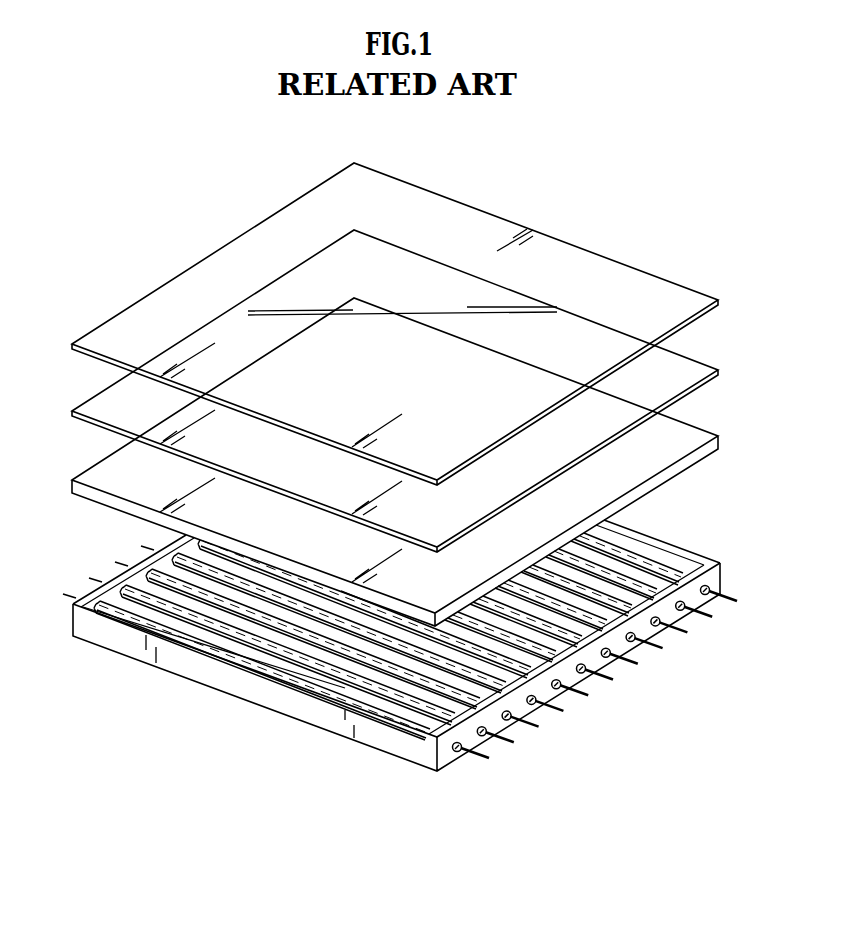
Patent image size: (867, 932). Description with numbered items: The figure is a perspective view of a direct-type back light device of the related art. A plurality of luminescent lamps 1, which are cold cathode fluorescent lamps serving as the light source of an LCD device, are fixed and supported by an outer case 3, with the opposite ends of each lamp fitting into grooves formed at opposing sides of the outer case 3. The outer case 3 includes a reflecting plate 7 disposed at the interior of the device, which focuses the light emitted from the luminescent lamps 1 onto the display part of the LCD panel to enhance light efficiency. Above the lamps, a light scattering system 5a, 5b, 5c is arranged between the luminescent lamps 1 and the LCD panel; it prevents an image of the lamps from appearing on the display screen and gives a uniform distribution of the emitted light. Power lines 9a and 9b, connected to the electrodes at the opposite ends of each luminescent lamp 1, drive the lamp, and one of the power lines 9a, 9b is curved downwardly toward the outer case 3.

The luminescent lamp 1 is at (270, 647).
The outer case 3 is at (420, 752).
The light scattering system 5a is at (678, 433).
The light scattering system 5b is at (678, 364).
The light scattering system 5c is at (678, 294).
The reflecting plate 7 is at (370, 668).
The power line 9a is at (66, 597).
The power line 9b is at (480, 764).